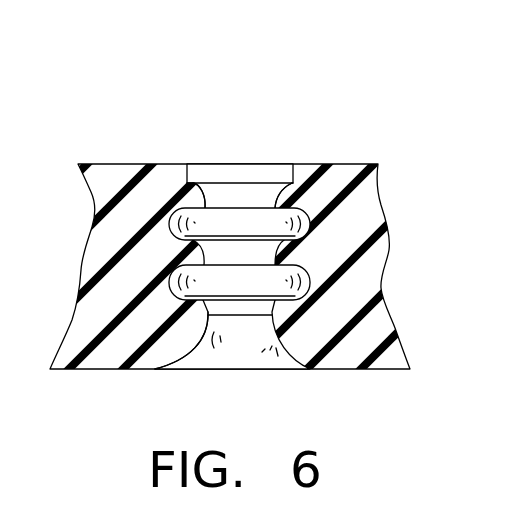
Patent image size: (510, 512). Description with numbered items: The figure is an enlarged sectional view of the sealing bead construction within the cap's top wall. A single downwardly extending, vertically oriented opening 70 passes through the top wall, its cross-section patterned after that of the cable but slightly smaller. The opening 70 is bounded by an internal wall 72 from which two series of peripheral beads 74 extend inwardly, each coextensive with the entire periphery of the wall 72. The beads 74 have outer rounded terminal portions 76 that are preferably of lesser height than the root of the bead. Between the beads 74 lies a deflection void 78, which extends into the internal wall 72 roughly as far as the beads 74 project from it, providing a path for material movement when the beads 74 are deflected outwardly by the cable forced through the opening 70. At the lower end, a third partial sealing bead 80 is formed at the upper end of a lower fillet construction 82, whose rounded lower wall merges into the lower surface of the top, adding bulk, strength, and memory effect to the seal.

The opening 70 is at (220, 175).
The internal wall 72 is at (270, 183).
The peripheral beads 74 is at (203, 163).
The outer rounded terminal portions 76 is at (278, 205).
The deflection void 78 is at (312, 287).
The partial sealing bead 80 is at (212, 320).
The lower fillet construction 82 is at (195, 352).